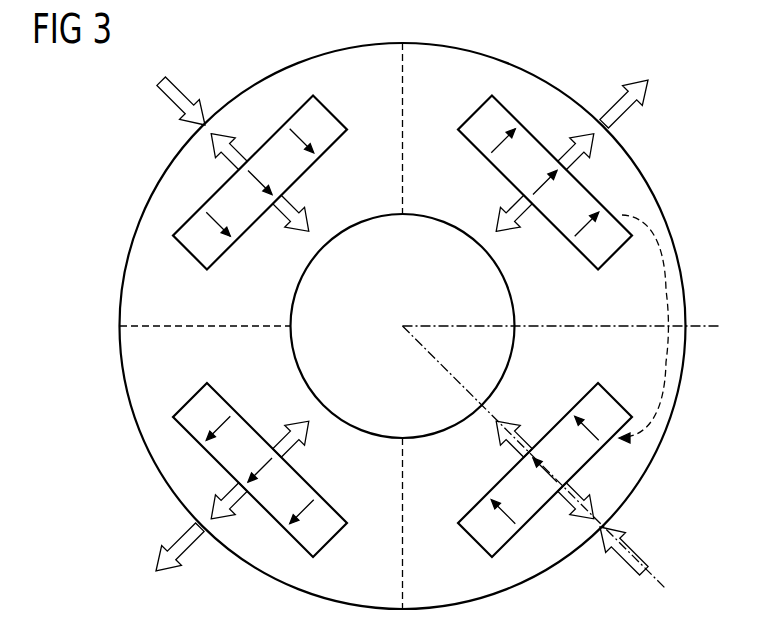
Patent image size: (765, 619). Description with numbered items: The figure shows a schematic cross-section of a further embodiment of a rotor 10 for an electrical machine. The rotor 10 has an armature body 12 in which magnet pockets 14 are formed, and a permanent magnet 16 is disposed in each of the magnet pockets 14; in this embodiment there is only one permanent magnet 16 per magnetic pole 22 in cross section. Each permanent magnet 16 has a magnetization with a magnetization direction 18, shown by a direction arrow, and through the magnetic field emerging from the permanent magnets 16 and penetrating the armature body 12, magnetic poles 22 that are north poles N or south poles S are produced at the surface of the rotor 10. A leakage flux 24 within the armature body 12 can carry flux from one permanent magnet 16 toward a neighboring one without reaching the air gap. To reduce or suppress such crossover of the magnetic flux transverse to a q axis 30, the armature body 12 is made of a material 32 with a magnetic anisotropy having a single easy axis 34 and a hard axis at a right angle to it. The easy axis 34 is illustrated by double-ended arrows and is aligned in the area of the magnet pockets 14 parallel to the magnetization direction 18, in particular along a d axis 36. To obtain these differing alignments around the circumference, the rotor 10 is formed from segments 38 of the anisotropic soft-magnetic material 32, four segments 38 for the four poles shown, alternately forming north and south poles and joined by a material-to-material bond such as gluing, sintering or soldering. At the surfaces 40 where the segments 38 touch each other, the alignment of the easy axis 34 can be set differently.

The rotor 10 is at (527, 70).
The armature body 12 is at (465, 61).
The magnet pockets 14 is at (593, 188).
The permanent magnet 16 is at (296, 176).
The magnetization direction 18 is at (492, 151).
The magnetic poles 22 is at (182, 90).
The leakage flux 24 is at (661, 257).
The q axis 30 is at (708, 324).
The material with magnetic anisotropy 32 is at (526, 262).
The easy axis 34 is at (310, 217).
The d axis 36 is at (666, 584).
The segments 38 is at (387, 213).
The surfaces 40 is at (400, 160).